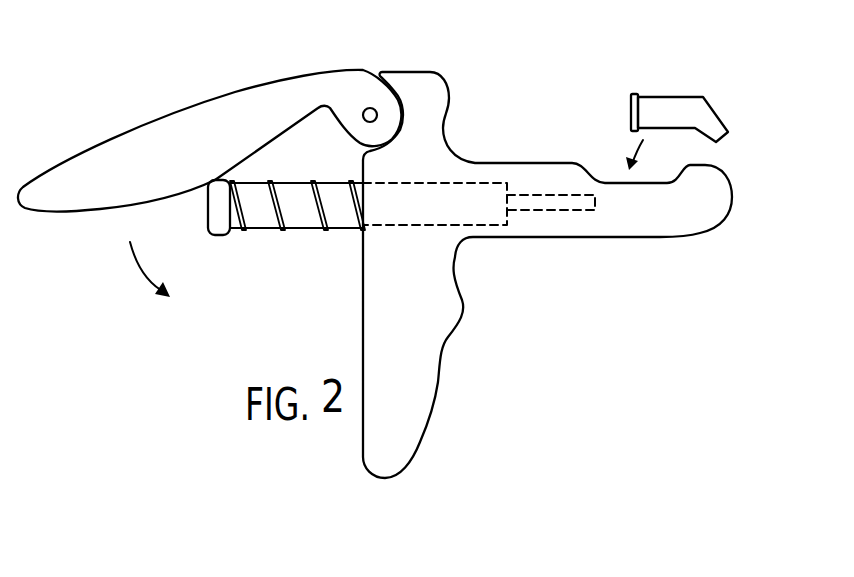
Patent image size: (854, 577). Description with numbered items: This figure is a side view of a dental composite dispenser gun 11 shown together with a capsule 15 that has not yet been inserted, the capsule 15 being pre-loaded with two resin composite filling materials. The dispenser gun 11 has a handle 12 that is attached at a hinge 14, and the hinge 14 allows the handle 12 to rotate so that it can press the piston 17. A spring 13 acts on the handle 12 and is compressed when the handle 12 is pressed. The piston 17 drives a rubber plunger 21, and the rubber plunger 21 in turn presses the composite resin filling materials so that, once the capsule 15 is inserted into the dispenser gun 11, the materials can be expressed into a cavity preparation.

The dispenser gun 11 is at (375, 338).
The handle 12 is at (197, 117).
The spring 13 is at (272, 212).
The hinge 14 is at (367, 108).
The capsule 15 is at (668, 107).
The piston 17 is at (437, 210).
The rubber plunger 21 is at (567, 205).